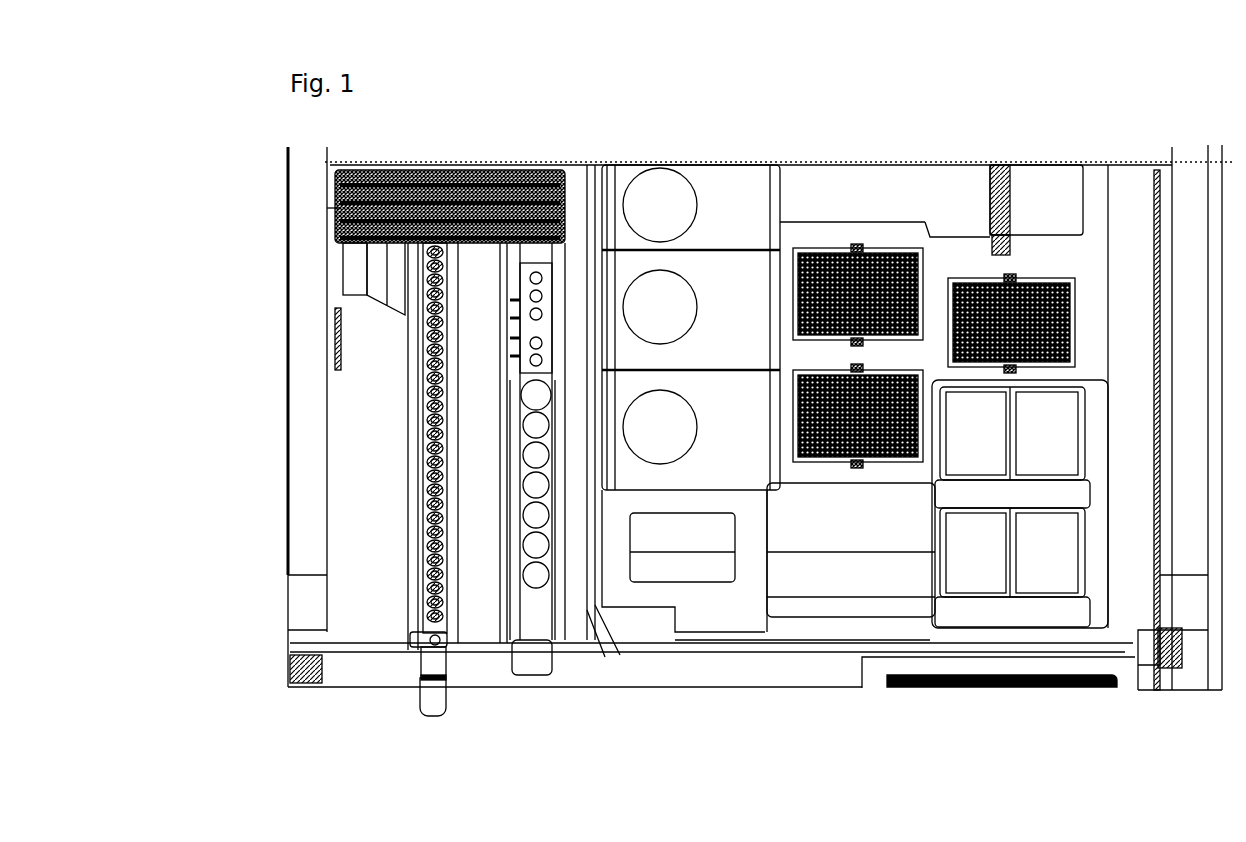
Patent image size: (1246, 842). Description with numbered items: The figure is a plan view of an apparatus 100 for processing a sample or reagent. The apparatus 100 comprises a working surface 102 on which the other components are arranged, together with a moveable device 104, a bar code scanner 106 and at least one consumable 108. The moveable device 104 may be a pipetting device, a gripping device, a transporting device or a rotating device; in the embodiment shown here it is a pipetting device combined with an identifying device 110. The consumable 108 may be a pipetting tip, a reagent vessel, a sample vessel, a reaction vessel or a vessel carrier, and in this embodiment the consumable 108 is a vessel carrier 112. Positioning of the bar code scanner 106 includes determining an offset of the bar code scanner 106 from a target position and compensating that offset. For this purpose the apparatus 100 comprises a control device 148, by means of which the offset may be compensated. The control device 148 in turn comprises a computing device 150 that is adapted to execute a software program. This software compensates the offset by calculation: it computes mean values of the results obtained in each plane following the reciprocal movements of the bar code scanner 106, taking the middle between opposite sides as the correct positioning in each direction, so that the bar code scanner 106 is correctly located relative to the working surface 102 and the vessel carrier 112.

The apparatus 100 is at (672, 147).
The working surface 102 is at (580, 172).
The moveable device 104 is at (470, 170).
The bar code scanner 106 is at (345, 262).
The identifying device 110 is at (404, 397).
The consumable 108 is at (410, 510).
The vessel carrier 112 is at (329, 609).
The control device 148 is at (1025, 178).
The computing device 150 is at (1063, 182).